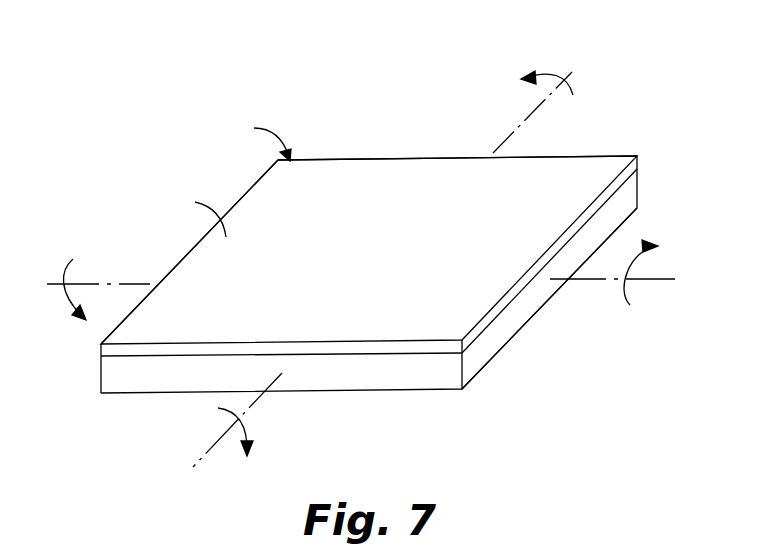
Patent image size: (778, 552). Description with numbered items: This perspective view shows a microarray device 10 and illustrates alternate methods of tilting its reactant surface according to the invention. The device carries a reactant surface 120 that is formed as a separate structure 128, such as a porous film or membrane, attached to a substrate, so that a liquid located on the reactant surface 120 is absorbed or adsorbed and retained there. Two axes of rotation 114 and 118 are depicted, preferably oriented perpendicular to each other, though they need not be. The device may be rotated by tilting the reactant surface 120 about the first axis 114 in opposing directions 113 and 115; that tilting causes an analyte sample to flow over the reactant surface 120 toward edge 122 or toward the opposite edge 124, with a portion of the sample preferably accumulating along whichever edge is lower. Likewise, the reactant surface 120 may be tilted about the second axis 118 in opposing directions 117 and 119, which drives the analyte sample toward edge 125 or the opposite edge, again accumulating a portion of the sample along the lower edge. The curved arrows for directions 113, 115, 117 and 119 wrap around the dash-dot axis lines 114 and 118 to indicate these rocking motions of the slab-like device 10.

The solar cell assembly 10 is at (255, 139).
The tilting direction 113 is at (250, 422).
The axis of rotation 114 is at (515, 130).
The tilting direction 115 is at (558, 68).
The tilting direction 117 is at (628, 306).
The axis of rotation 118 is at (130, 284).
The tilting direction 119 is at (67, 272).
The reactant surface 120 is at (369, 250).
The edge 122 is at (492, 293).
The edge 124 is at (189, 252).
The edge 125 is at (407, 168).
The separate structure 128 is at (470, 338).